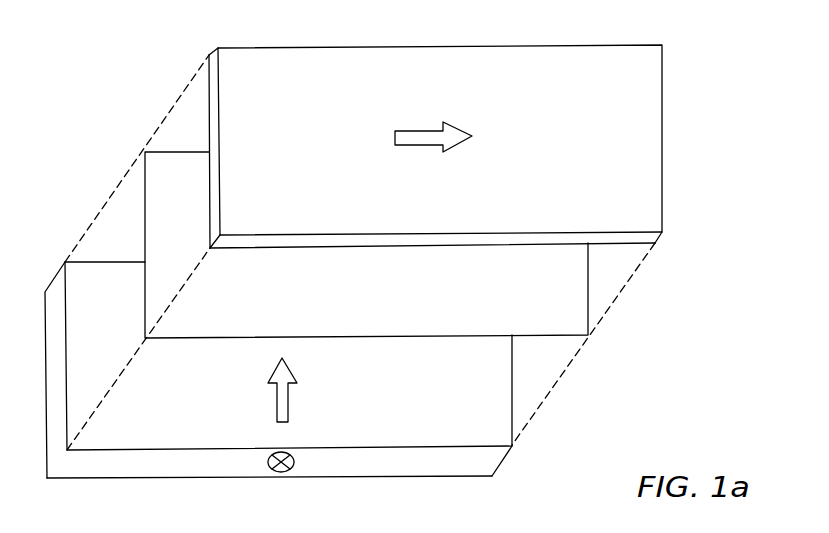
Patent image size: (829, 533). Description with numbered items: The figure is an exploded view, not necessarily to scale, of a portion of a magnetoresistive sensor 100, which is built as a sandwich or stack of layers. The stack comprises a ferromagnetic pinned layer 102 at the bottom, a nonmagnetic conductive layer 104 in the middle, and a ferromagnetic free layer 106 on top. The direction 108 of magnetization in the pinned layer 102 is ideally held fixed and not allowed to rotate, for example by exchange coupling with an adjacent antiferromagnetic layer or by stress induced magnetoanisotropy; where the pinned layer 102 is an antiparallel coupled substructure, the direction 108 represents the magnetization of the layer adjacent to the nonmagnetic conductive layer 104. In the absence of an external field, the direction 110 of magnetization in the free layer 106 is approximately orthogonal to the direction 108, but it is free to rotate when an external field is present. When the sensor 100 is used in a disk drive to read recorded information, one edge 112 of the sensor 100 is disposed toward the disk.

The magnetoresistive sensor 100 is at (711, 94).
The ferromagnetic pinned layer 102 is at (512, 422).
The nonmagnetic conductive layer 104 is at (588, 312).
The ferromagnetic free layer 106 is at (662, 200).
The direction of magnetization in the pinned layer 108 is at (325, 415).
The direction of magnetization in the free layer 110 is at (420, 145).
The edge of the sensor 112 is at (522, 240).